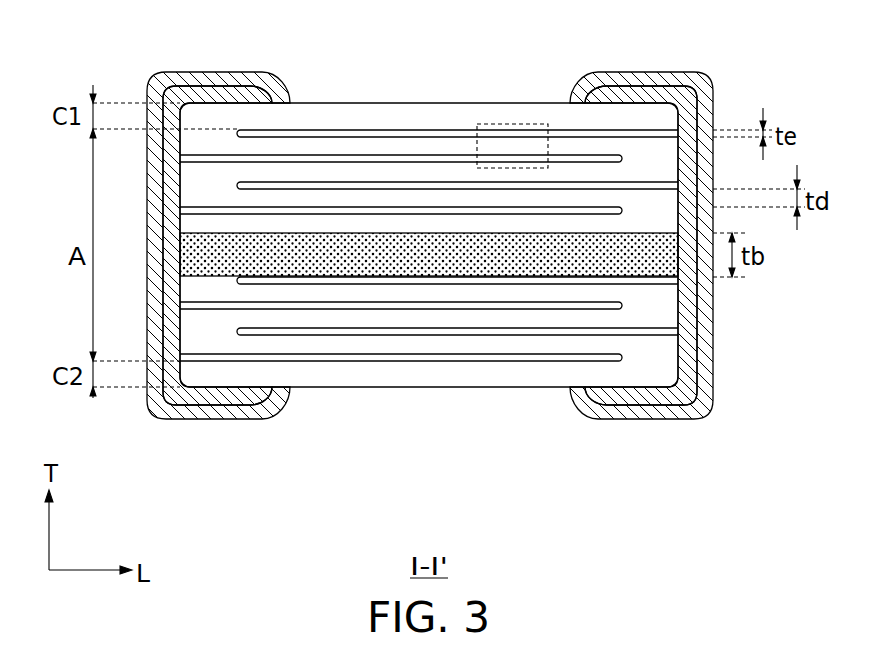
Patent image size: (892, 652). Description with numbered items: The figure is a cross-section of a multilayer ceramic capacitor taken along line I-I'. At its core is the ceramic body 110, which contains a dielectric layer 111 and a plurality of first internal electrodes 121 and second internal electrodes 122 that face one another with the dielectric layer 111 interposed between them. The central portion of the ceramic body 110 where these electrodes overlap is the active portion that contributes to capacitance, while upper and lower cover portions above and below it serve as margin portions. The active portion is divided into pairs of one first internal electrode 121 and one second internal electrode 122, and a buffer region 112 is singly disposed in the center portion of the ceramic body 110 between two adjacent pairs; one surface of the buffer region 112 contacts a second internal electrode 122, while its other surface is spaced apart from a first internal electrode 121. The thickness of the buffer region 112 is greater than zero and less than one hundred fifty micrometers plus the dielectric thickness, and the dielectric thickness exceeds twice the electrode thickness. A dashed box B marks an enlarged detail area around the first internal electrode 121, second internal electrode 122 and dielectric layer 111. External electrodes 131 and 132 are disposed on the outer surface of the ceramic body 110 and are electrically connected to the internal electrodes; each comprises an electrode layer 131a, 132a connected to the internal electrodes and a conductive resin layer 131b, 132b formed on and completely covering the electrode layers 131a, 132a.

The ceramic body 110 is at (380, 389).
The dielectric layer 111 is at (447, 143).
The buffer region 112 is at (461, 262).
The first internal electrode 121 is at (380, 160).
The second internal electrode 122 is at (308, 130).
The first external electrode 131 is at (219, 300).
The electrode layer 131a is at (143, 481).
The conductive resin layer 131b is at (195, 411).
The second external electrode 132 is at (634, 300).
The electrode layer 132a is at (651, 404).
The conductive resin layer 132b is at (605, 411).
The enlarged region B is at (510, 124).